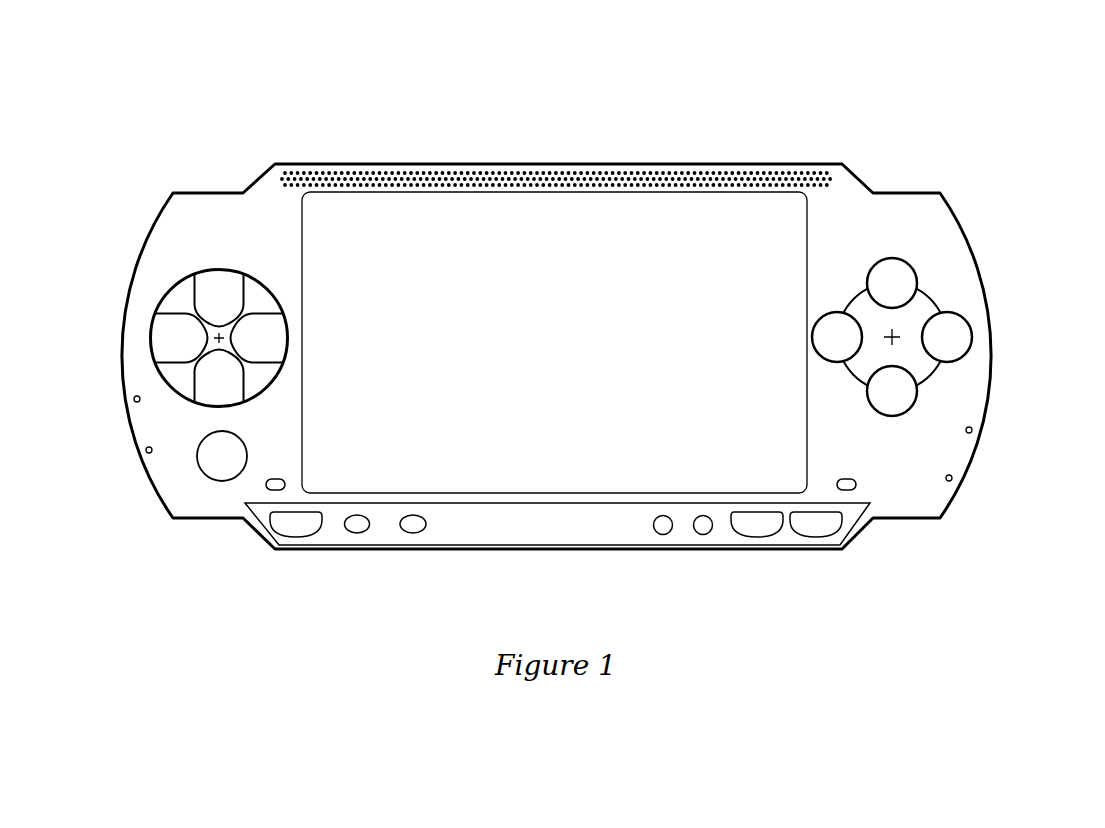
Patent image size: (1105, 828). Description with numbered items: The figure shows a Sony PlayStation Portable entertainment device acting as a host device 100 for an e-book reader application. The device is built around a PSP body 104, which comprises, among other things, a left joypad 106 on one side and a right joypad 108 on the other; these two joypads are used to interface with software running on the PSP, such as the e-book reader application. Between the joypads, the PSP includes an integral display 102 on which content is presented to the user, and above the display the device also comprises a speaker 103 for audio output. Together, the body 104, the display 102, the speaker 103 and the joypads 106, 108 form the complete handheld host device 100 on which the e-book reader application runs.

The host device 100 is at (925, 119).
The integral display 102 is at (575, 463).
The speaker 103 is at (347, 170).
The PSP body 104 is at (942, 250).
The left joypad 106 is at (176, 338).
The right joypad 108 is at (947, 335).